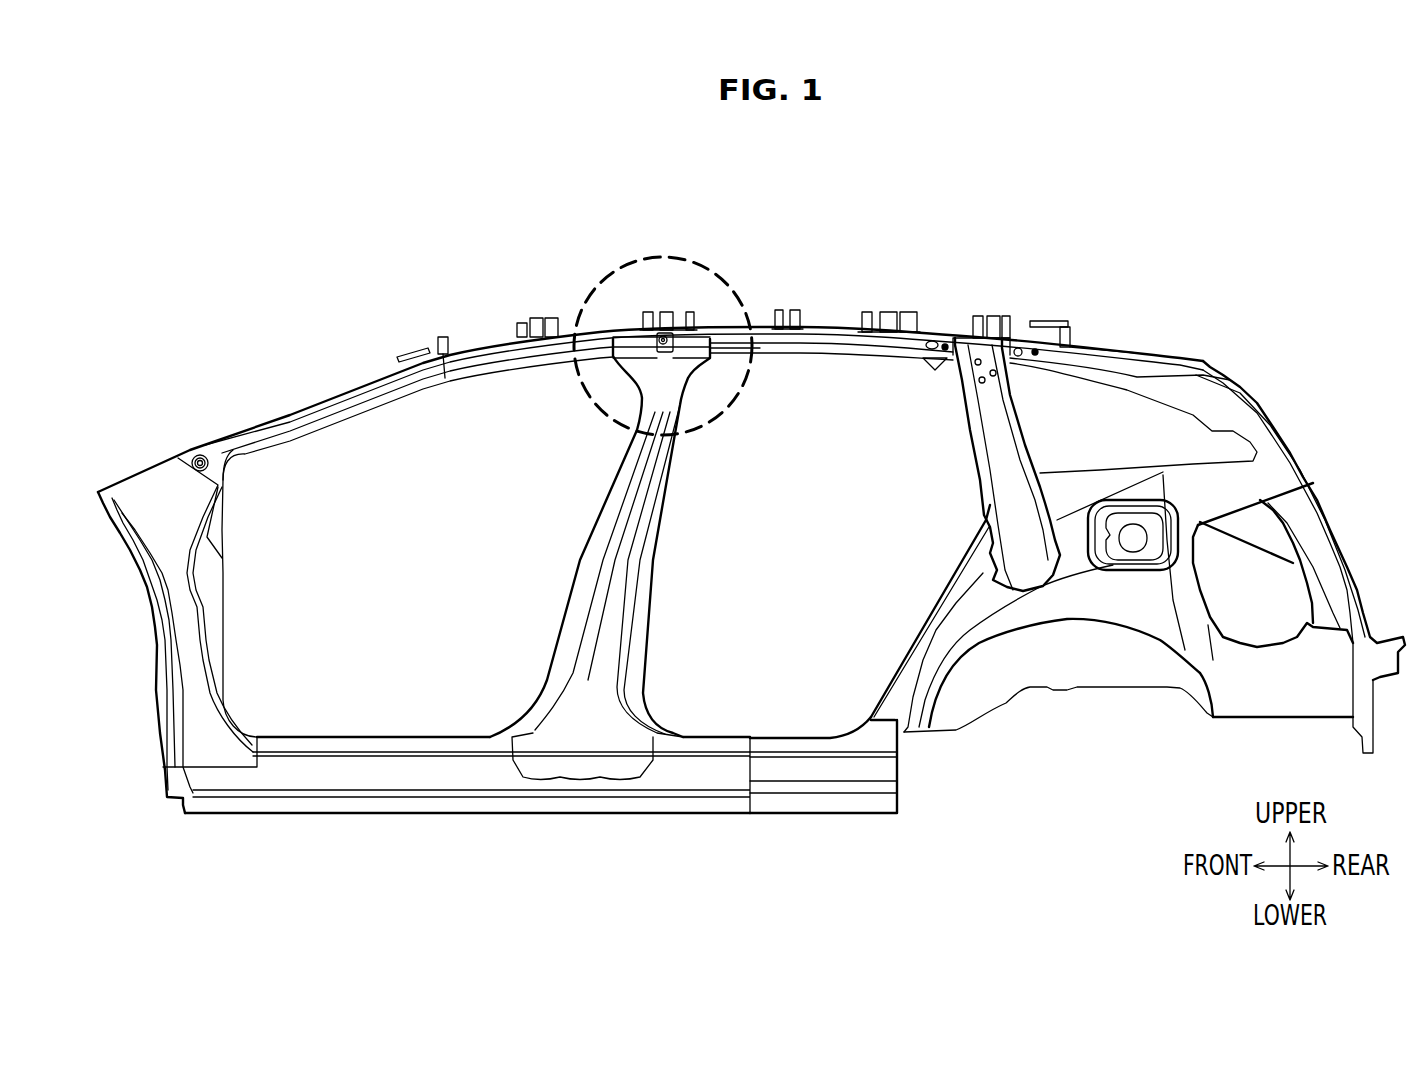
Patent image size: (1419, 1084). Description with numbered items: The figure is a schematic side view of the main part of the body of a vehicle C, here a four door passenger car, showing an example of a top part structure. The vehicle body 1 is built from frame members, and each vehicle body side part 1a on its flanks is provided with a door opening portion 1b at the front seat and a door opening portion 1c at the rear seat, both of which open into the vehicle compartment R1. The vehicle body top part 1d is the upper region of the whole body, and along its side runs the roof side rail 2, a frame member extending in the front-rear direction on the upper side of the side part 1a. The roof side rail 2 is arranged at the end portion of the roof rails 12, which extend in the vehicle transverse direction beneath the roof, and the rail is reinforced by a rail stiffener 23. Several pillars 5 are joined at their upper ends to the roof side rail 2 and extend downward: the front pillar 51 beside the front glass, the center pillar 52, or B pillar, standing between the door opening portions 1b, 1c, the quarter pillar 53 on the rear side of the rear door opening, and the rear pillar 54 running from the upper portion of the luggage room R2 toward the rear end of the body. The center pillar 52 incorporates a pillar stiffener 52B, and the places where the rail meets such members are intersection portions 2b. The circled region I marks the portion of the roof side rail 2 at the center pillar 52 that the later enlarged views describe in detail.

The vehicle C is at (337, 172).
The vehicle body 1 is at (478, 306).
The vehicle body side part 1a is at (183, 643).
The door opening portion at a front seat 1b is at (367, 680).
The door opening portion at a rear seat 1c is at (795, 682).
The vehicle body top part 1d is at (595, 335).
The roof side rail 2 is at (613, 323).
The intersection portion 2b is at (632, 330).
The pillar 5 is at (751, 573).
The front pillar 51 is at (280, 415).
The center pillar 52 is at (600, 492).
The pillar stiffener 52B is at (620, 532).
The quarter pillar 53 is at (997, 453).
The rear pillar 54 is at (1213, 412).
The roof rail 12 is at (873, 318).
The rail stiffener 23 is at (727, 330).
The enlarged region I is at (696, 250).
The vehicle compartment R1 is at (418, 551).
The luggage room R2 is at (1138, 447).